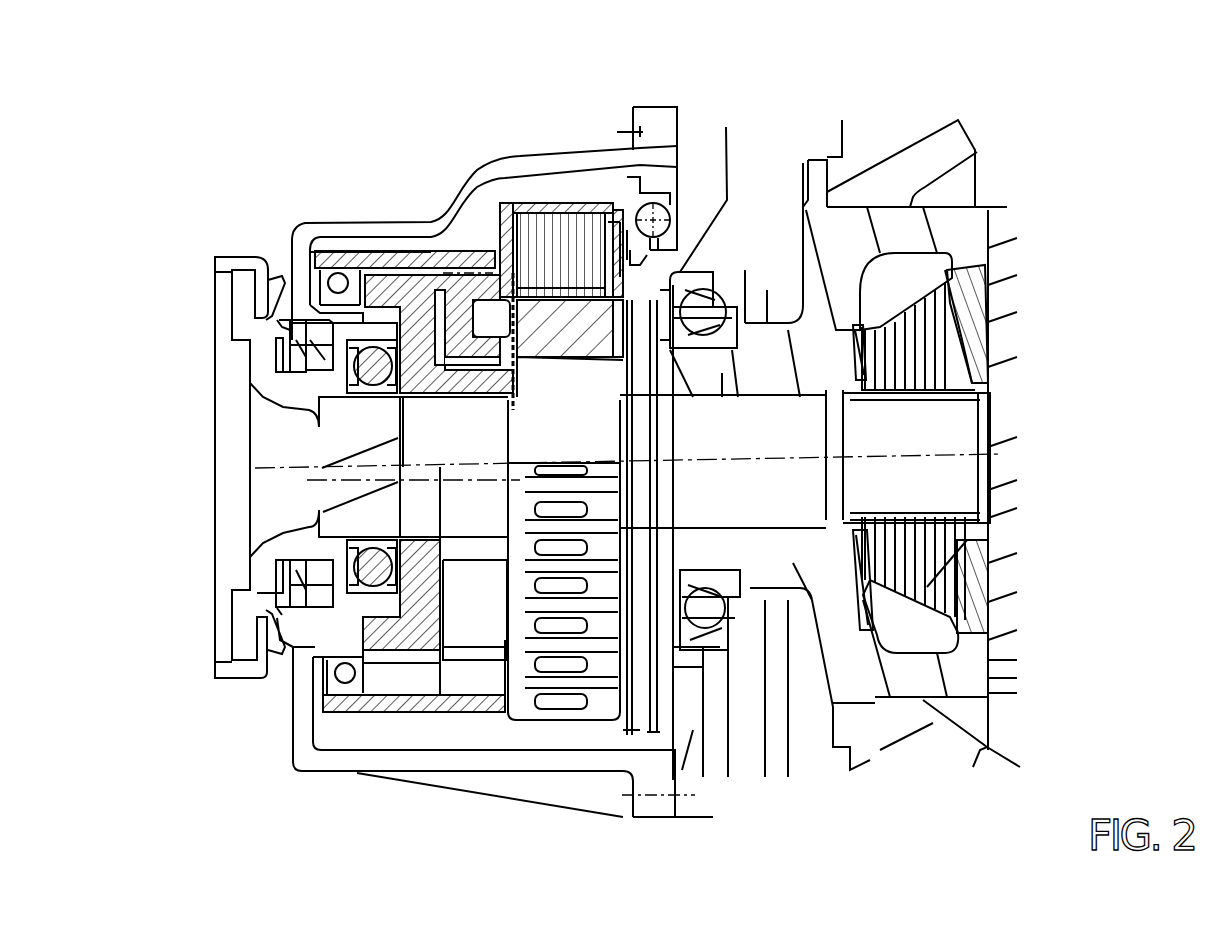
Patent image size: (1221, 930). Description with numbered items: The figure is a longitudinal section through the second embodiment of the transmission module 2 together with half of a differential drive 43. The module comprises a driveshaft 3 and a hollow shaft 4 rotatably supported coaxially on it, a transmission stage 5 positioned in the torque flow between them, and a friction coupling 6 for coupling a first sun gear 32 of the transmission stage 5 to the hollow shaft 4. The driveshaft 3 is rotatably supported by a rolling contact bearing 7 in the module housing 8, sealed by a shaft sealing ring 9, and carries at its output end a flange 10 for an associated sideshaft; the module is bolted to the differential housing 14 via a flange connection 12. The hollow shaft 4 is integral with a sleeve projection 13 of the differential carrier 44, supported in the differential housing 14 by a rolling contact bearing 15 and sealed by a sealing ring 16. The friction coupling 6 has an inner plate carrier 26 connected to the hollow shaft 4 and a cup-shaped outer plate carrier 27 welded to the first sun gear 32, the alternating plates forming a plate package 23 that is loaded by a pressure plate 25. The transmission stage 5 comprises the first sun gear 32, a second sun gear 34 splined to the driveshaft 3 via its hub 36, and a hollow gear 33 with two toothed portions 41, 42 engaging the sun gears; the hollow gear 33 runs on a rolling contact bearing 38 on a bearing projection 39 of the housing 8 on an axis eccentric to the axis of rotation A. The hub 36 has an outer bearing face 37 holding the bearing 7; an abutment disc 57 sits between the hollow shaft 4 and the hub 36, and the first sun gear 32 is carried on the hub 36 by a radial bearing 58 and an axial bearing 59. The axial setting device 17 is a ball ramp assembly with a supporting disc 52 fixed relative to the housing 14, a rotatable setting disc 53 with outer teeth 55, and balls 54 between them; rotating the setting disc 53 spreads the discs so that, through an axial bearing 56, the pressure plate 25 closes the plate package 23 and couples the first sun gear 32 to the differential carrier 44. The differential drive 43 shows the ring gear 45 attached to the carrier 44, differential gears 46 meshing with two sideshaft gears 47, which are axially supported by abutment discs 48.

The transmission module 2 is at (322, 174).
The driveshaft 3 is at (321, 427).
The hollow shaft 4 is at (588, 375).
The transmission stage 5 is at (403, 242).
The friction coupling 6 is at (557, 733).
The rolling contact bearing 7 is at (299, 372).
The housing 8 is at (297, 234).
The shaft sealing ring 9 is at (276, 358).
The flange 10 is at (238, 288).
The flange connection 12 is at (658, 803).
The sleeve projection 13 is at (725, 400).
The differential housing 14 is at (713, 255).
The rolling contact bearing 15 is at (713, 600).
The sealing ring 16 is at (663, 400).
The axial setting device 17 is at (657, 168).
The plate package 23 is at (543, 207).
The pressure plate 25 is at (630, 400).
The inner plate carrier 26 is at (603, 400).
The outer plate carrier 27 is at (528, 198).
The first sun gear 32 is at (462, 251).
The hollow gear 33 is at (416, 254).
The second sun gear 34 is at (383, 273).
The hub 36 is at (497, 380).
The outer bearing face 37 is at (276, 567).
The rolling contact bearing 38 is at (323, 687).
The bearing projection 39 is at (333, 645).
The toothed portion 41 is at (463, 690).
The toothed portion 42 is at (383, 690).
The differential drive 43 is at (1016, 124).
The differential carrier 44 is at (958, 228).
The ring gear 45 is at (967, 177).
The differential gears 46 is at (980, 303).
The sideshaft gears 47 is at (950, 377).
The abutment discs 48 is at (866, 400).
The supporting disc 52 is at (672, 197).
The setting disc 53 is at (643, 260).
The balls 54 is at (670, 218).
The outer teeth 55 is at (648, 190).
The axial bearing 56 is at (620, 287).
The abutment disc 57 is at (518, 400).
The radial bearing 58 is at (473, 400).
The axial bearing 59 is at (437, 400).
The axis of rotation A is at (960, 457).